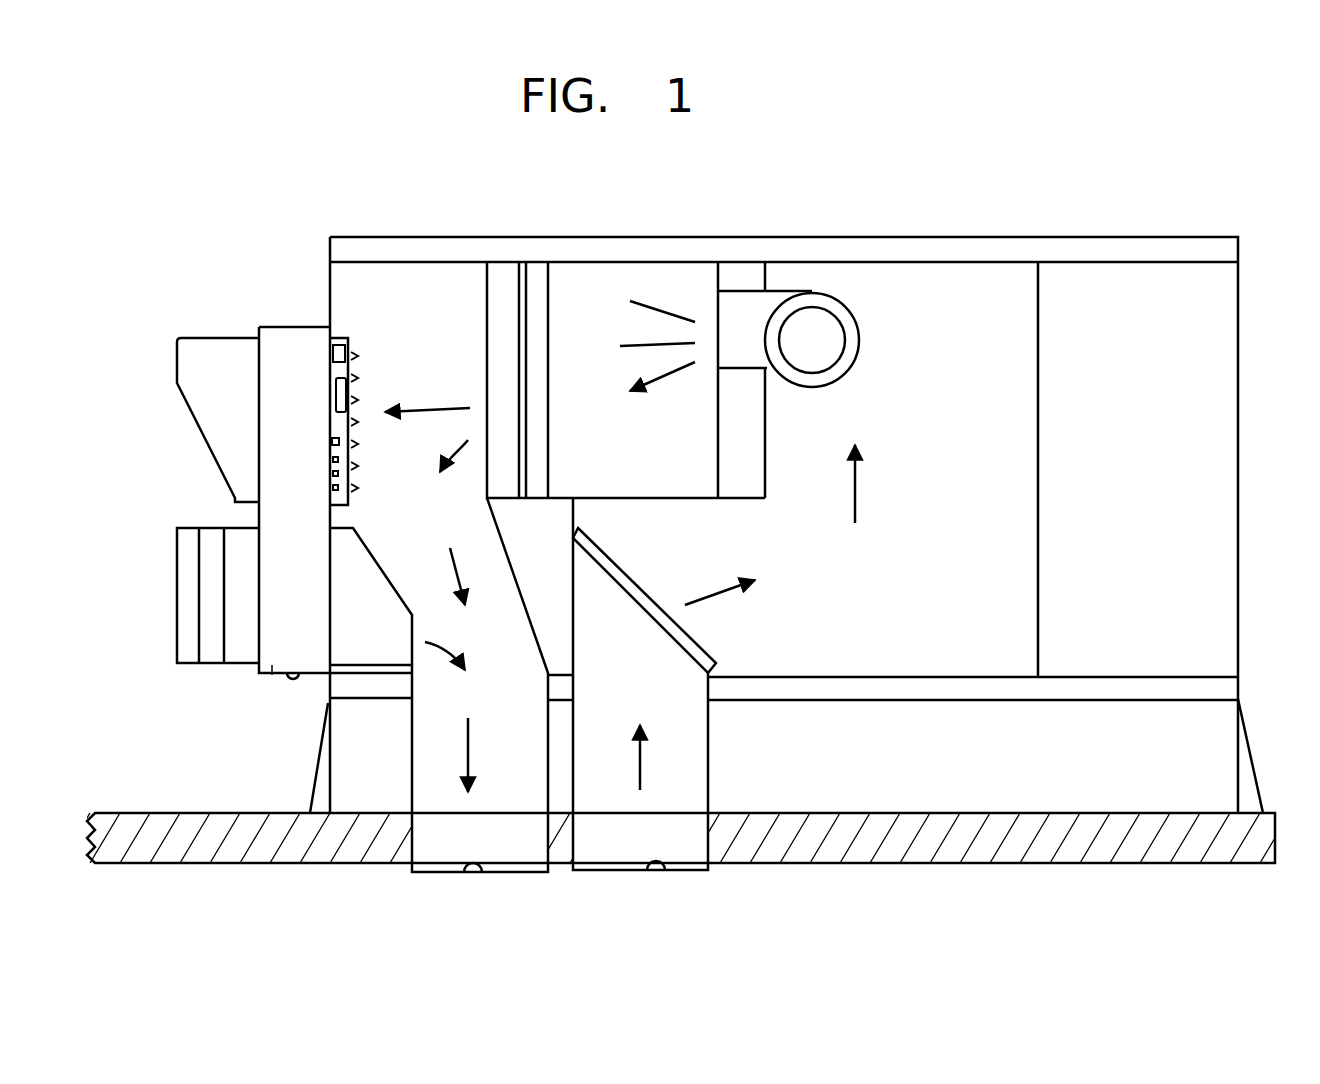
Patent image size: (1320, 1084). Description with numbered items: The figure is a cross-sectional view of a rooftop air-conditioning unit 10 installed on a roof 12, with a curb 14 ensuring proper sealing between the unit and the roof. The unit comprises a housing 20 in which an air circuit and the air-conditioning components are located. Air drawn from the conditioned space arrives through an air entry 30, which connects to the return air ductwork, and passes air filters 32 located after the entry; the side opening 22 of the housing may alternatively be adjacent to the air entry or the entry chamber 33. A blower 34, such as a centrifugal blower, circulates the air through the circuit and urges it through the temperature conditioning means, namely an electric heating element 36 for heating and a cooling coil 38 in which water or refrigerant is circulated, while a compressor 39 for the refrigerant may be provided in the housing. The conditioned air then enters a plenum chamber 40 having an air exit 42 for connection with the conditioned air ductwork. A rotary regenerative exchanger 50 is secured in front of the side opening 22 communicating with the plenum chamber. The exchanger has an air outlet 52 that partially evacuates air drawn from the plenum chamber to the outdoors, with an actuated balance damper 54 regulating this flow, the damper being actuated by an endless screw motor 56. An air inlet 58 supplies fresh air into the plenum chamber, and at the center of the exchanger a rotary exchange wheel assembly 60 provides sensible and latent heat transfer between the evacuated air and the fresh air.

The rooftop air-conditioning unit 10 is at (368, 196).
The roof 12 is at (143, 813).
The curb 14 is at (325, 765).
The housing 20 is at (942, 238).
The side opening 22 is at (340, 326).
The air entry 30 is at (665, 870).
The air filters 32 is at (640, 606).
The entry chamber 33 is at (928, 536).
The blower 34 is at (857, 348).
The electric heating element 36 is at (536, 272).
The cooling coil 38 is at (499, 277).
The compressor 39 is at (1160, 488).
The plenum chamber 40 is at (433, 518).
The air exit 42 is at (483, 872).
The rotary regenerative exchanger 50 is at (276, 322).
The air outlet 52 is at (182, 418).
The actuated balance damper 54 is at (358, 400).
The endless screw motor 56 is at (335, 393).
The air inlet 58 is at (168, 590).
The rotary exchange wheel assembly 60 is at (268, 676).